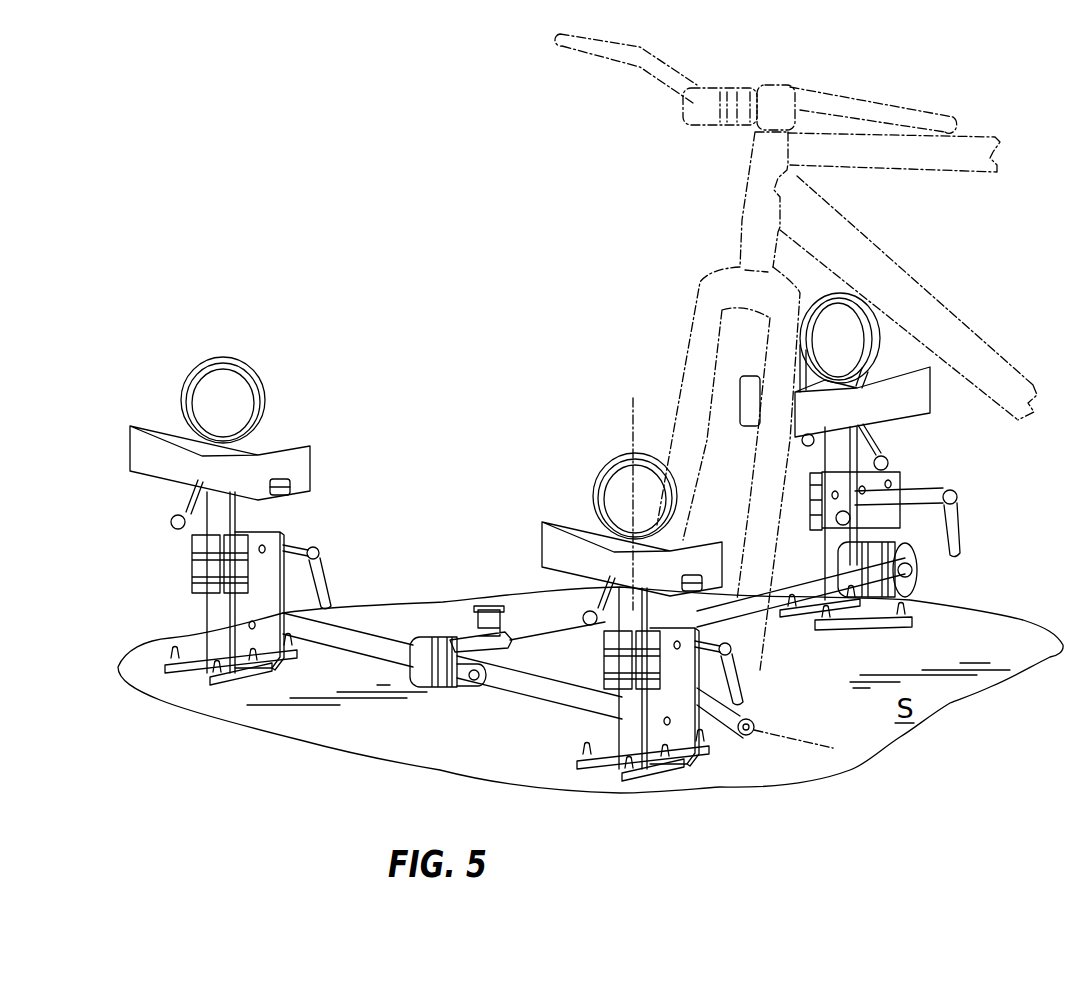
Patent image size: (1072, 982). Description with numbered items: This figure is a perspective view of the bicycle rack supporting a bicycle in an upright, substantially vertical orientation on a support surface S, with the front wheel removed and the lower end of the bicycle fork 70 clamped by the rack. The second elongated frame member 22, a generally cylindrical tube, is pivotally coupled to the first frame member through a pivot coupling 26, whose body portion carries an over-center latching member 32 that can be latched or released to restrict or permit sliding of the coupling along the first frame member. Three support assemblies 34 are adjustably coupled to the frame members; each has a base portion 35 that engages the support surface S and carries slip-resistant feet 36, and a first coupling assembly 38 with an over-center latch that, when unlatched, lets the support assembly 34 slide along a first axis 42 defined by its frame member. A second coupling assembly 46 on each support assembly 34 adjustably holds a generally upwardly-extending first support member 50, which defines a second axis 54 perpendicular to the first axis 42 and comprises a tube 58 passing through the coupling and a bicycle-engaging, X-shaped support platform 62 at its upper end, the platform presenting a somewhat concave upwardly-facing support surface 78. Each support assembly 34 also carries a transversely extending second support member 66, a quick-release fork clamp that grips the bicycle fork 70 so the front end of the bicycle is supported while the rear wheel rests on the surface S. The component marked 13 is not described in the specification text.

The connecting tube 13 is at (333, 636).
The second elongated frame member 22 is at (805, 592).
The pivot coupling 26 is at (467, 632).
The latching member 32 is at (443, 686).
The support assembly 34 is at (273, 535).
The base portion 35 is at (683, 763).
The feet 36 is at (680, 768).
The first coupling assembly 38 is at (720, 693).
The first axis 42 is at (790, 742).
The second coupling assembly 46 is at (612, 657).
The first support member 50 is at (654, 608).
The second axis 54 is at (633, 423).
The tube 58 is at (628, 605).
The support platform 62 is at (547, 535).
The second support member 66 is at (707, 627).
The bicycle fork 70 is at (737, 632).
The support surface 78 is at (688, 523).